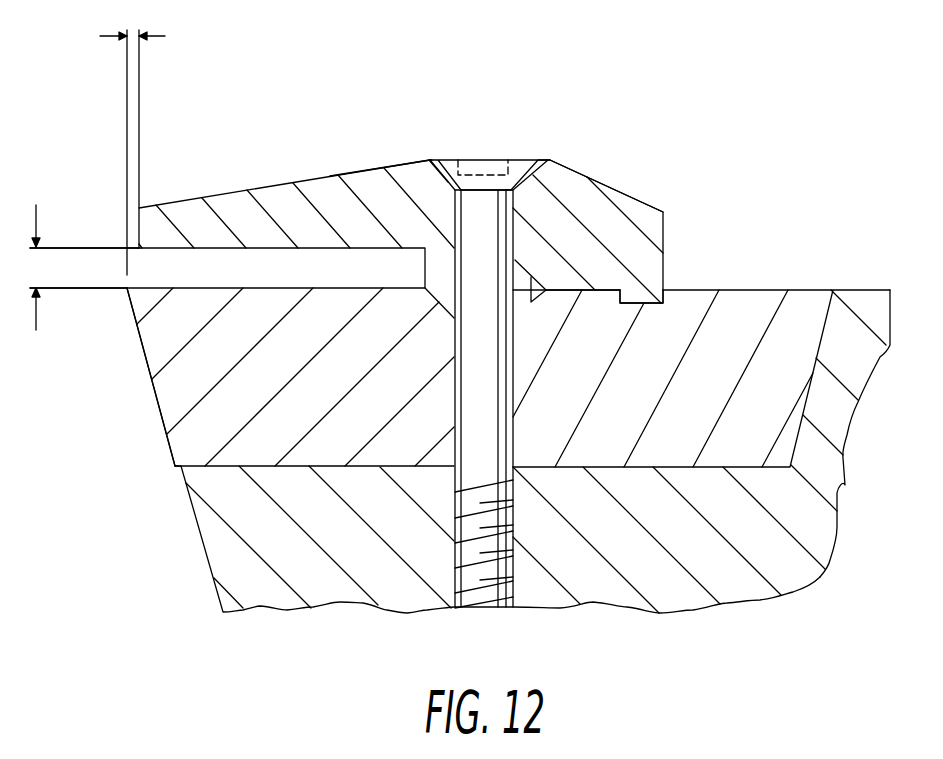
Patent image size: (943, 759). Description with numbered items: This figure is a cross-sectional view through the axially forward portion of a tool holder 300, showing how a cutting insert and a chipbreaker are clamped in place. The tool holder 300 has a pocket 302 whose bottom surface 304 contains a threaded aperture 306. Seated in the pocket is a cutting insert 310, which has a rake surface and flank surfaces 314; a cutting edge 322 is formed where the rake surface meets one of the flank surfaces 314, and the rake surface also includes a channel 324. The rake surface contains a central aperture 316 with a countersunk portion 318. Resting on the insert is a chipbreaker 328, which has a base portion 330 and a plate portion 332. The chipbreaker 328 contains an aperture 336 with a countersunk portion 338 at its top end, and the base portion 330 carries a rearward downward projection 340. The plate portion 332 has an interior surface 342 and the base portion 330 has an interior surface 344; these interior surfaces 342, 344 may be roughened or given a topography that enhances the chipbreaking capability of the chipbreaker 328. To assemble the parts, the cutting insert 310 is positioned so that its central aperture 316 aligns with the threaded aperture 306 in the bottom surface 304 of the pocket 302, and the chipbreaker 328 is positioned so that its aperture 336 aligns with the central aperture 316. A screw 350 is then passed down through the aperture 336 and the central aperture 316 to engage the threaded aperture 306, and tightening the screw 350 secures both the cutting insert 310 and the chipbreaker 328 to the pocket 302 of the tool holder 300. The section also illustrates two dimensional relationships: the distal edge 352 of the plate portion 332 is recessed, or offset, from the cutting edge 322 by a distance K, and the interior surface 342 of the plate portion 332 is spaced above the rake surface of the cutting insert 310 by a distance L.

The distance K is at (145, 39).
The distance L is at (82, 285).
The tool holder 300 is at (257, 587).
The pocket 302 is at (746, 467).
The bottom surface 304 is at (633, 467).
The threaded aperture 306 is at (455, 567).
The cutting insert 310 is at (188, 442).
The flank surfaces 314 is at (140, 343).
The central aperture 316 is at (458, 412).
The countersunk portion 318 is at (530, 252).
The cutting edge 322 is at (137, 320).
The channel 324 is at (647, 302).
The chipbreaker 328 is at (417, 173).
The base portion 330 is at (533, 277).
The plate portion 332 is at (312, 182).
The aperture 336 is at (457, 213).
The countersunk portion 338 is at (532, 167).
The rearward downward projection 340 is at (633, 303).
The interior surface 342 is at (147, 248).
The interior surface 344 is at (425, 265).
The screw 350 is at (498, 403).
The distal edge 352 is at (139, 217).